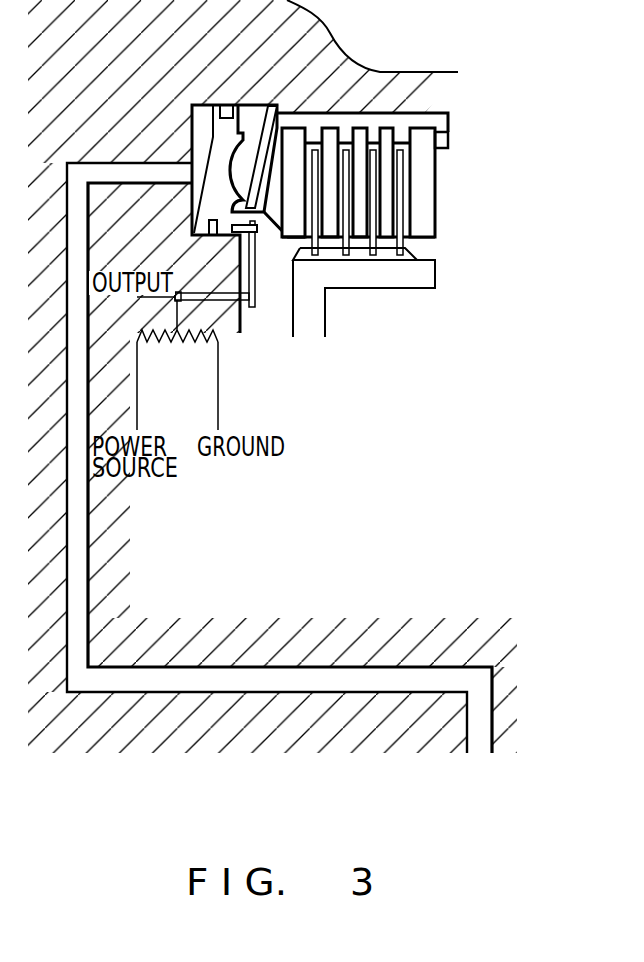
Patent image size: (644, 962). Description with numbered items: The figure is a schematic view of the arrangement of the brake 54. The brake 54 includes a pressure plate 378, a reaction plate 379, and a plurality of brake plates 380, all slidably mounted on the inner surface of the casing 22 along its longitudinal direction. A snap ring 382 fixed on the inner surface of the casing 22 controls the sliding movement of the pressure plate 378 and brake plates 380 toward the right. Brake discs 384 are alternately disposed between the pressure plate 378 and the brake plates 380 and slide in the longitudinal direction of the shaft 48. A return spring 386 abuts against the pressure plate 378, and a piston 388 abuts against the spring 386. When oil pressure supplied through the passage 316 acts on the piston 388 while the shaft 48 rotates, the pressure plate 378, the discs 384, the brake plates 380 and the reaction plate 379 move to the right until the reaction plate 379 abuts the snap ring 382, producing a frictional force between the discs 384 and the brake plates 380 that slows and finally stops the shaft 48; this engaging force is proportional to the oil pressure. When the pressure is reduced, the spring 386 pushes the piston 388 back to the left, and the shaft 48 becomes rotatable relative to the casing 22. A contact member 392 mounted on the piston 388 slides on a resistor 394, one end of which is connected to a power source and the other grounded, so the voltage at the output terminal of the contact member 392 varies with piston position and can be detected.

The casing 22 is at (424, 73).
The shaft 48 is at (414, 289).
The brake 54 is at (456, 182).
The passage 316 is at (257, 686).
The pressure plate 378 is at (286, 240).
The reaction plate 379 is at (428, 220).
The brake plates 380 is at (387, 133).
The snap ring 382 is at (448, 143).
The brake discs 384 is at (396, 240).
The return spring 386 is at (267, 127).
The piston 388 is at (232, 127).
The contact member 392 is at (202, 292).
The resistor 394 is at (177, 340).